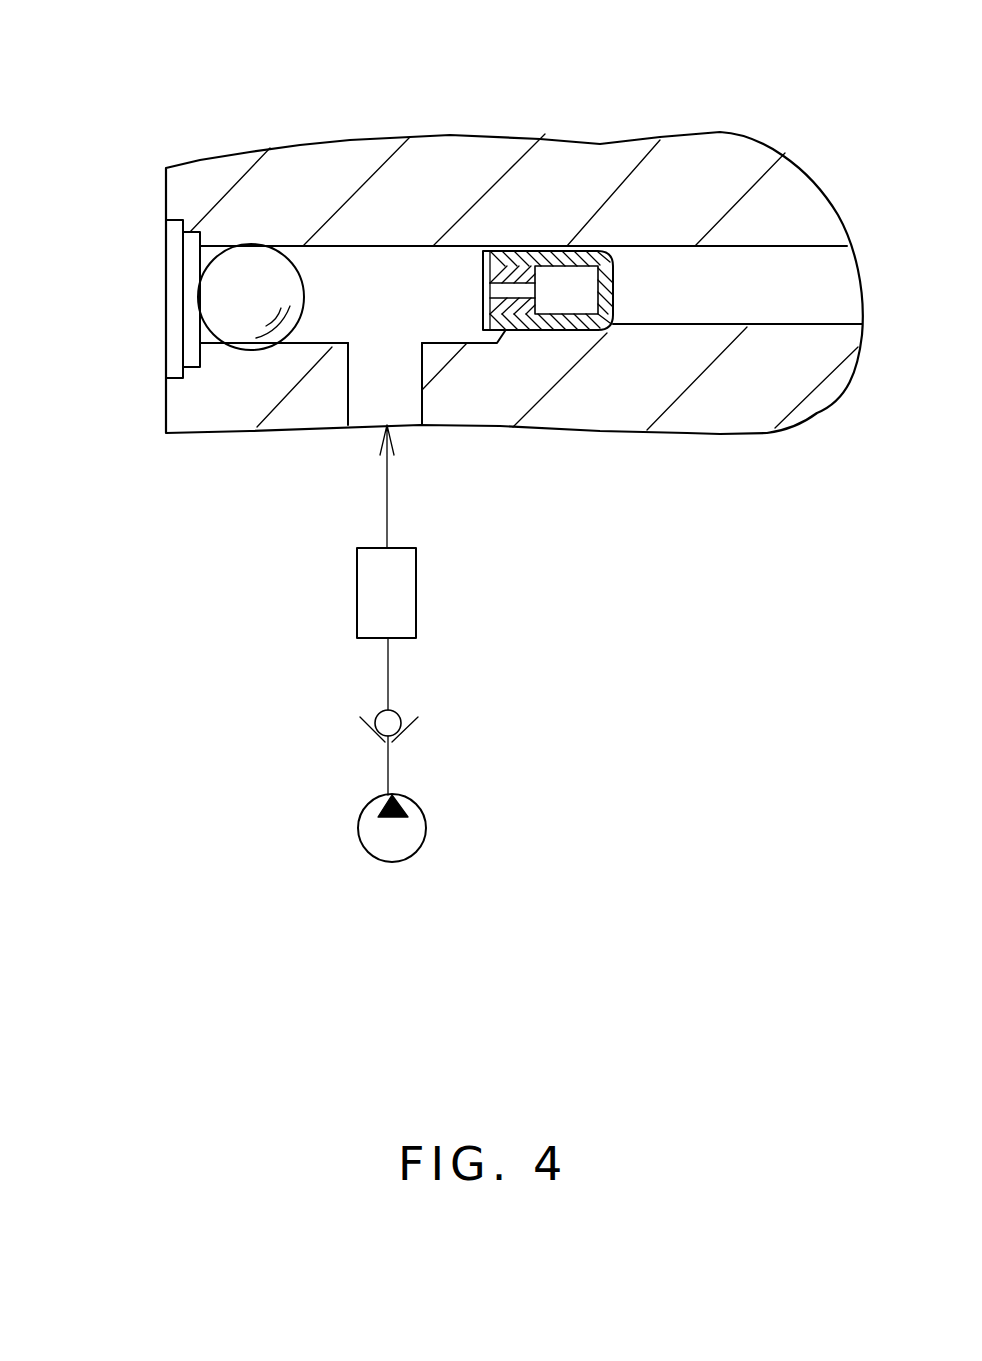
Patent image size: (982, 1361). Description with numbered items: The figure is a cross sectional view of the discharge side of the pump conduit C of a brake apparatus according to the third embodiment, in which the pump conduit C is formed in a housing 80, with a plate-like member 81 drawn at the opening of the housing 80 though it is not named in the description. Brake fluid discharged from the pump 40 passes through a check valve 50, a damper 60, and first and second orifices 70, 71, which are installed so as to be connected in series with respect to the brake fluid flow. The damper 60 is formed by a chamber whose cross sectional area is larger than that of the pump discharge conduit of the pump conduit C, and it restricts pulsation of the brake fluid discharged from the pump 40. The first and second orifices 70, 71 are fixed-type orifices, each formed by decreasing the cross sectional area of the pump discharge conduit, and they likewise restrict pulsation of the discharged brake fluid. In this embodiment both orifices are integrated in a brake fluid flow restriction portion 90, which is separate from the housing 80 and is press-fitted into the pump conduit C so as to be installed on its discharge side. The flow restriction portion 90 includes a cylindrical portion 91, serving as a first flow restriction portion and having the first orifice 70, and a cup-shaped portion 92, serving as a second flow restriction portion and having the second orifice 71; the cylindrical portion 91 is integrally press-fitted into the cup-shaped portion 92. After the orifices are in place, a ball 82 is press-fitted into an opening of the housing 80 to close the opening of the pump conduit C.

The housing 80 is at (328, 118).
The cover plate 81 is at (165, 194).
The ball 82 is at (225, 303).
The brake fluid flow restriction portion 90 is at (444, 285).
The cylindrical portion 91 is at (520, 248).
The cup-shaped portion 92 is at (608, 289).
The first orifice 70 is at (520, 290).
The second orifice 71 is at (643, 290).
The damper 60 is at (398, 595).
The check valve 50 is at (415, 730).
The pump 40 is at (426, 832).
The pump conduit C is at (363, 375).